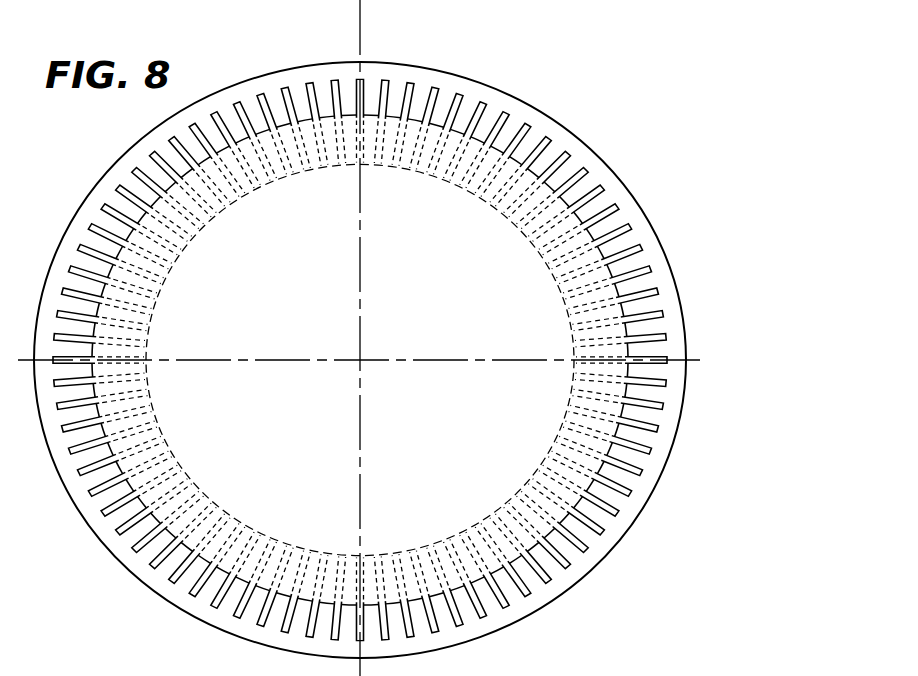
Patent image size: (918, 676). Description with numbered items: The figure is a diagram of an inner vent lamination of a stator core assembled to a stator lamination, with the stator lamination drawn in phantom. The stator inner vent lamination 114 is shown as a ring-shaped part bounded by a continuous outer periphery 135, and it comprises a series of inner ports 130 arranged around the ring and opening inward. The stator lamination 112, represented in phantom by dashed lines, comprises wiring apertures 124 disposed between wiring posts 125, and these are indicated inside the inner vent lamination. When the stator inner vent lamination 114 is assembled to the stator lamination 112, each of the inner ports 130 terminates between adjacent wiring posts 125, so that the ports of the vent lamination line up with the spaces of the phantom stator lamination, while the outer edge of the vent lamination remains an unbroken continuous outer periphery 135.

The stator lamination 112 is at (476, 194).
The stator inner vent lamination 114 is at (690, 351).
The wiring apertures 124 is at (577, 156).
The wiring posts 125 is at (642, 237).
The inner ports 130 is at (648, 286).
The continuous outer periphery 135 is at (662, 472).